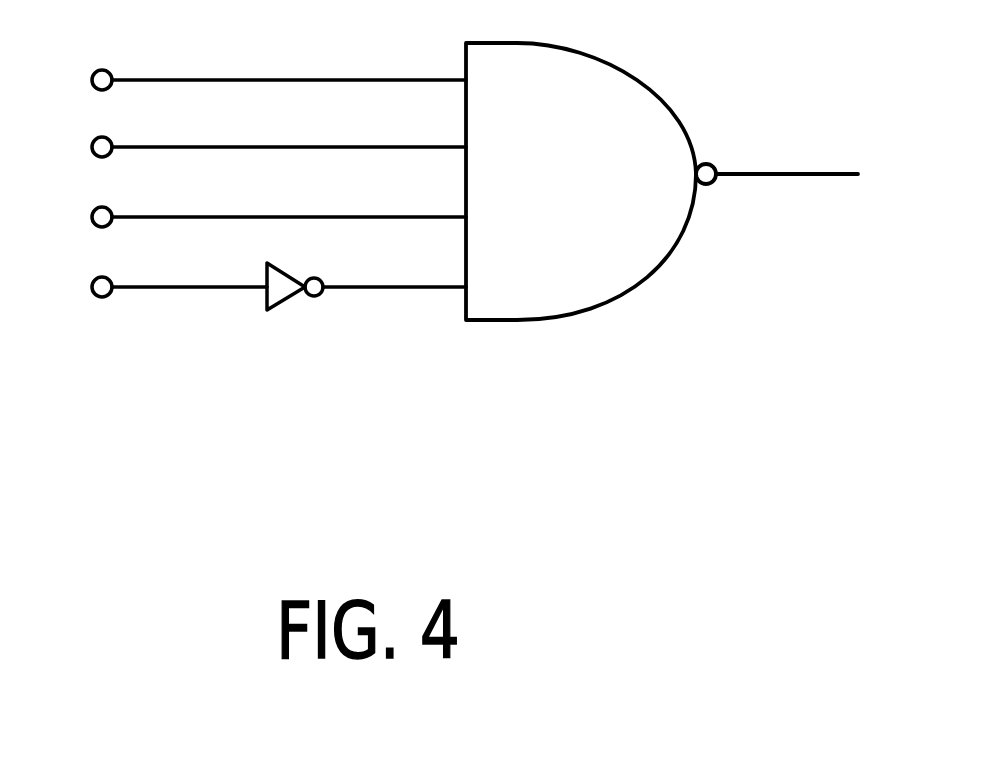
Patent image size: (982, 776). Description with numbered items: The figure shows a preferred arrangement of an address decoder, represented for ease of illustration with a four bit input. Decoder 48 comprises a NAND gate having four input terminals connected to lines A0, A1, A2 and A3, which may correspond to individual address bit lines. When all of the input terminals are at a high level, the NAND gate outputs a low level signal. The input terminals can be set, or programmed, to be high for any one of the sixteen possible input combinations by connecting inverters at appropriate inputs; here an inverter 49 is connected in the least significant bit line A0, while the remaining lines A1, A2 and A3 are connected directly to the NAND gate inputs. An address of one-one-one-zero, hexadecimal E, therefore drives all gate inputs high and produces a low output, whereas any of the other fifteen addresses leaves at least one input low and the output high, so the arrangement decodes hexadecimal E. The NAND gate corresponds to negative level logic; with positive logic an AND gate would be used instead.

The decoder 48 is at (620, 285).
The inverter 49 is at (283, 292).
The line A3 is at (249, 82).
The line A2 is at (249, 149).
The line A1 is at (249, 219).
The line A0 is at (249, 289).